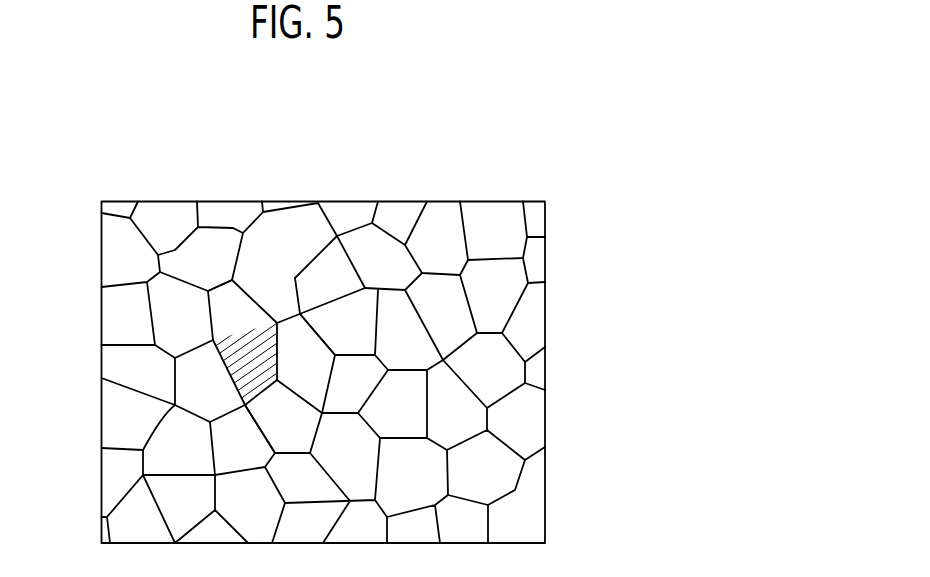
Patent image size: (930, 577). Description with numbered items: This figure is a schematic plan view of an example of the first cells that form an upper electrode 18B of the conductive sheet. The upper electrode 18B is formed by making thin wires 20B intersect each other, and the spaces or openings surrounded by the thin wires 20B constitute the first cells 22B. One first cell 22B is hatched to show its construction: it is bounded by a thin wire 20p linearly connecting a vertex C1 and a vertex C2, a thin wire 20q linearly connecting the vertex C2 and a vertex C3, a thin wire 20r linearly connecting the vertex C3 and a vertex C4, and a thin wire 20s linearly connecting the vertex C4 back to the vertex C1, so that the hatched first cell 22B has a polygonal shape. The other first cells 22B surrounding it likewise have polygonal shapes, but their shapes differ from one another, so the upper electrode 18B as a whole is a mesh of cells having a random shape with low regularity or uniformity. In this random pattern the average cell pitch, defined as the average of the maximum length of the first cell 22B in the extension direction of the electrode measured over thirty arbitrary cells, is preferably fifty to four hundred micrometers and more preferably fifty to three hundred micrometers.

The upper electrode 18B is at (344, 190).
The thin wire 20B is at (528, 274).
The first cell 22B is at (223, 338).
The thin wire 20p is at (228, 373).
The thin wire 20q is at (259, 398).
The thin wire 20r is at (281, 340).
The thin wire 20s is at (222, 336).
The vertex C1 is at (211, 337).
The vertex C2 is at (244, 407).
The vertex C3 is at (279, 379).
The vertex C4 is at (276, 321).